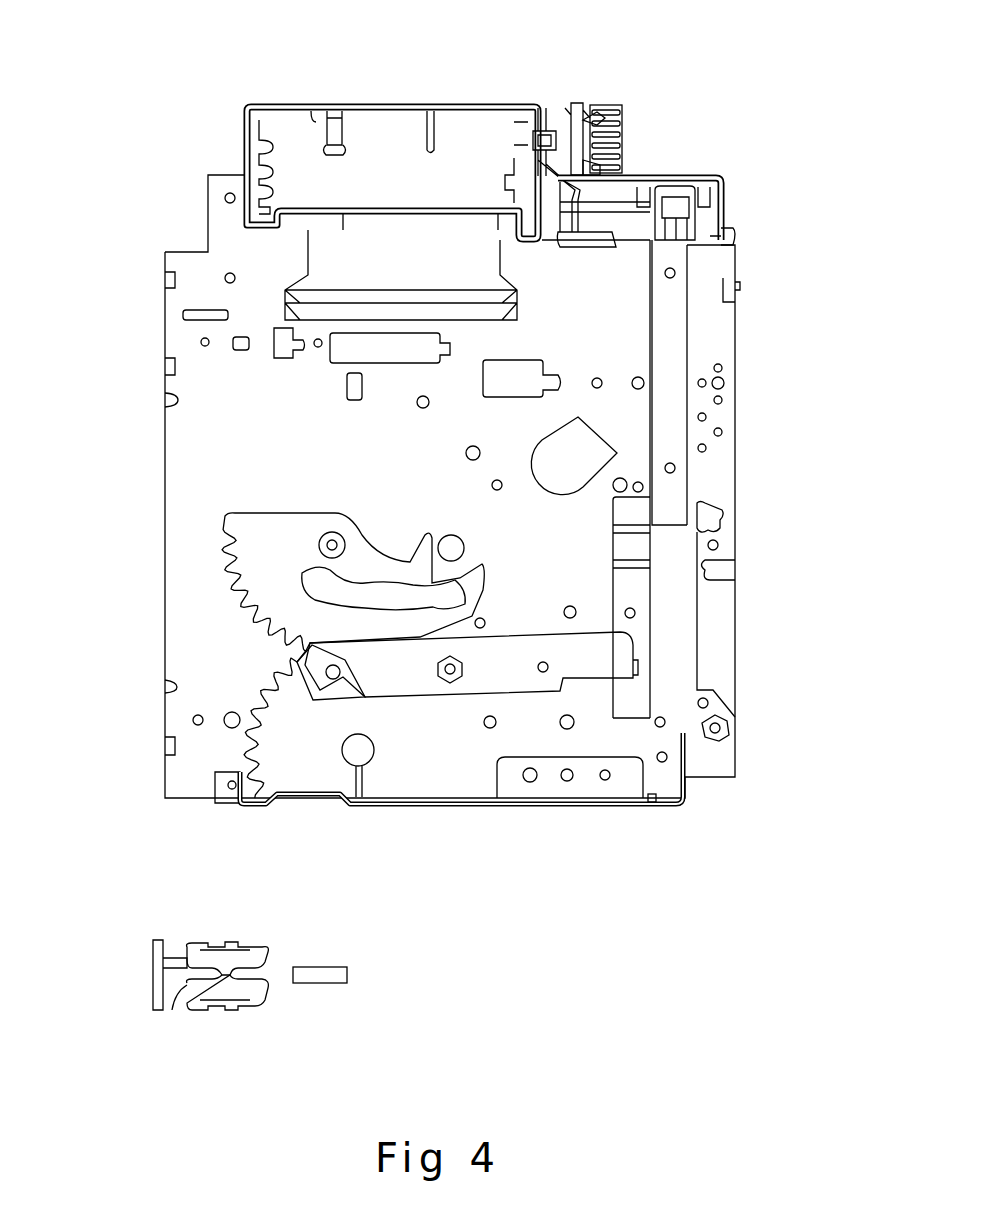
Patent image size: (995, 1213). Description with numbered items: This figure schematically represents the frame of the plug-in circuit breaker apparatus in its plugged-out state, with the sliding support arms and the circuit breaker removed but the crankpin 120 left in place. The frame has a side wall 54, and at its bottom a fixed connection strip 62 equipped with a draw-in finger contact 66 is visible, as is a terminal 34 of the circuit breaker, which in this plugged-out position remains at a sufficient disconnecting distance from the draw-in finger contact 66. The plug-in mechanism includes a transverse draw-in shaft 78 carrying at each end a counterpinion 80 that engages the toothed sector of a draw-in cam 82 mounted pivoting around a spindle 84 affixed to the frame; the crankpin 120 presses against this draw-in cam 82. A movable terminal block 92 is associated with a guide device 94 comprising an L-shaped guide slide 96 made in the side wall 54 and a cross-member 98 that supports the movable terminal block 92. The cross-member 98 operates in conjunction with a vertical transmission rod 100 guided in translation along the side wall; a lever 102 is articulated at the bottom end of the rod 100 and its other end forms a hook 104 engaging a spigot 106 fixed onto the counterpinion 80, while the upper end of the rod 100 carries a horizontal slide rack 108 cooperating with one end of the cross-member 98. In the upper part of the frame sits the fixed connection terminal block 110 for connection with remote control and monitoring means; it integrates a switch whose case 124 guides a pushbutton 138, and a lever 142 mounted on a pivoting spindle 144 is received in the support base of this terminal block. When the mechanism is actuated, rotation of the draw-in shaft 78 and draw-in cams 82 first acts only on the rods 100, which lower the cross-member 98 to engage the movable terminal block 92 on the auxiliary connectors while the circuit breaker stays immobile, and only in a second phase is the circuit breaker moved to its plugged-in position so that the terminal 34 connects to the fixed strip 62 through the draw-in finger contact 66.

The terminal 34 is at (327, 977).
The side wall 54 is at (715, 477).
The fixed connection strip 62 is at (165, 997).
The draw-in finger contact 66 is at (252, 993).
The transverse draw-in shaft 78 is at (356, 749).
The counterpinion 80 is at (285, 723).
The draw-in cam 82 is at (260, 568).
The spindle 84 is at (330, 545).
The movable terminal block 92 is at (677, 185).
The guide device 94 is at (708, 265).
The L-shaped guide slide 96 is at (580, 243).
The cross-member 98 is at (707, 190).
The vertical transmission rod 100 is at (670, 349).
The lever 102 is at (597, 820).
The hook 104 is at (307, 655).
The spigot 106 is at (332, 679).
The horizontal slide rack 108 is at (608, 214).
The fixed connection terminal block 110 is at (631, 122).
The crankpin 120 is at (455, 550).
The case 124 is at (597, 113).
The pushbutton 138 is at (578, 114).
The lever 142 is at (528, 128).
The pivoting spindle 144 is at (520, 193).